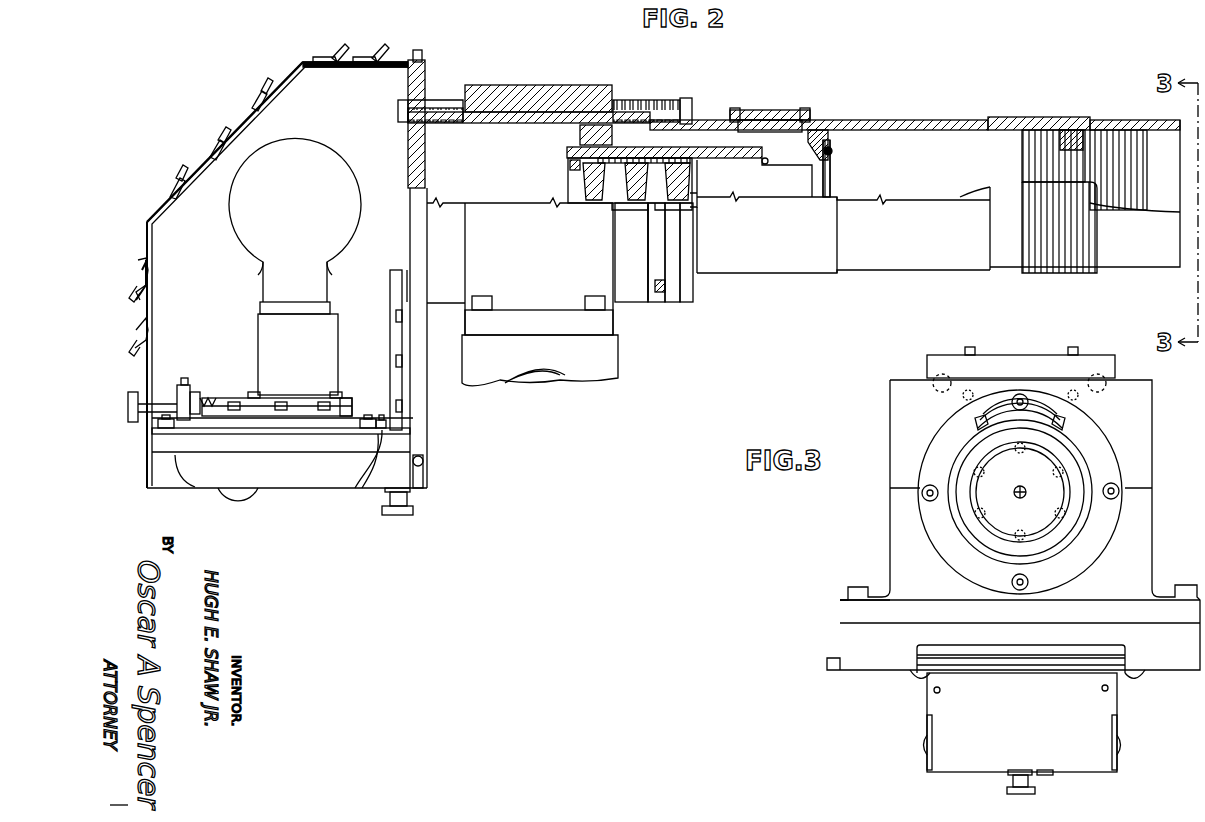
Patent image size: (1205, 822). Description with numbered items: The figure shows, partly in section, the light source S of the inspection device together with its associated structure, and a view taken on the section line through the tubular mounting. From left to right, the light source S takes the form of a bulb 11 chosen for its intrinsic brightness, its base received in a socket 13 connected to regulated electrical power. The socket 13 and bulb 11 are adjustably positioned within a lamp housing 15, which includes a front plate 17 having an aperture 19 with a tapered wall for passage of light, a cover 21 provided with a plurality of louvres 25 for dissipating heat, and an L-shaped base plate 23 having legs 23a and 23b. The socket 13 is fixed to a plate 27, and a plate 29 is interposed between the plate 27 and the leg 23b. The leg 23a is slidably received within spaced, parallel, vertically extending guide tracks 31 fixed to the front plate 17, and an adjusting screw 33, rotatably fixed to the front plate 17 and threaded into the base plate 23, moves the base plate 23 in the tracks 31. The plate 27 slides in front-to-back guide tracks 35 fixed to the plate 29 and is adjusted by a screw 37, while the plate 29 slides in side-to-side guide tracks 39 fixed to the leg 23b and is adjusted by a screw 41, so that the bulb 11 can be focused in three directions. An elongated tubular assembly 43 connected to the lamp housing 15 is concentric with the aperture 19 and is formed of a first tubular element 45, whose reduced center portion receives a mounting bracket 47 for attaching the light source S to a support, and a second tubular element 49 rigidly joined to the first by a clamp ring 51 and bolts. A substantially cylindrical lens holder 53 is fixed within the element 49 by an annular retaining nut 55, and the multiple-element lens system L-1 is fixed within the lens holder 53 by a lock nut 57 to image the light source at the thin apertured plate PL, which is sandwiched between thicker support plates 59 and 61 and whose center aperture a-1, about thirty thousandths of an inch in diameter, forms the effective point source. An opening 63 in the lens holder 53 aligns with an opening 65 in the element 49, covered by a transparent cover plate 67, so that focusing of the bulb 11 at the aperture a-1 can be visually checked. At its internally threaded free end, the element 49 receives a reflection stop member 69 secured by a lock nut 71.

In FIG. 2, the light source S is at (237, 132).
In FIG. 2, the bulb 11 is at (243, 252).
In FIG. 2, the socket 13 is at (258, 348).
In FIG. 2, the lamp housing 15 is at (160, 212).
In FIG. 2, the front plate 17 is at (427, 420).
In FIG. 3, the front plate 17 is at (1115, 705).
In FIG. 2, the aperture 19 is at (410, 185).
In FIG. 2, the cover 21 is at (147, 242).
In FIG. 2, the base plate 23 is at (383, 428).
In FIG. 2, the leg of base plate 23a is at (390, 305).
In FIG. 2, the leg of base plate 23b is at (292, 440).
In FIG. 2, the louvres 25 is at (146, 335).
In FIG. 2, the plate 27 is at (222, 400).
In FIG. 2, the plate 29 is at (250, 433).
In FIG. 2, the guide tracks 31 is at (410, 394).
In FIG. 2, the adjusting screw 33 is at (398, 514).
In FIG. 3, the adjusting screw 33 is at (1036, 790).
In FIG. 2, the guide tracks 35 is at (201, 471).
In FIG. 2, the adjusting screw 37 is at (128, 410).
In FIG. 2, the guide tracks 39 is at (165, 430).
In FIG. 2, the adjusting screw 41 is at (237, 490).
In FIG. 2, the tubular assembly 43 is at (810, 108).
In FIG. 2, the first tubular element 45 is at (442, 100).
In FIG. 2, the mounting bracket 47 is at (530, 85).
In FIG. 3, the mounting bracket 47 is at (890, 420).
In FIG. 2, the second tubular element 49 is at (947, 120).
In FIG. 2, the clamp ring 51 is at (670, 100).
In FIG. 3, the clamp ring 51 is at (1082, 565).
In FIG. 2, the lens holder 53 is at (726, 160).
In FIG. 2, the retaining nut 55 is at (580, 135).
In FIG. 2, the lock nut 57 is at (568, 165).
In FIG. 2, the support plate 59 is at (832, 152).
In FIG. 3, the support plate 59 is at (1018, 518).
In FIG. 2, the support plate 61 is at (823, 177).
In FIG. 2, the opening 63 is at (765, 165).
In FIG. 2, the opening 65 is at (792, 120).
In FIG. 2, the transparent cover plate 67 is at (770, 110).
In FIG. 3, the transparent cover plate 67 is at (1045, 415).
In FIG. 2, the reflection stop member 69 is at (1060, 145).
In FIG. 2, the lock nut 71 is at (1085, 150).
In FIG. 2, the lens system L-1 is at (645, 302).
In FIG. 2, the apertured plate PL is at (830, 170).
In FIG. 2, the aperture a-1 is at (830, 192).
In FIG. 3, the aperture a-1 is at (1039, 493).